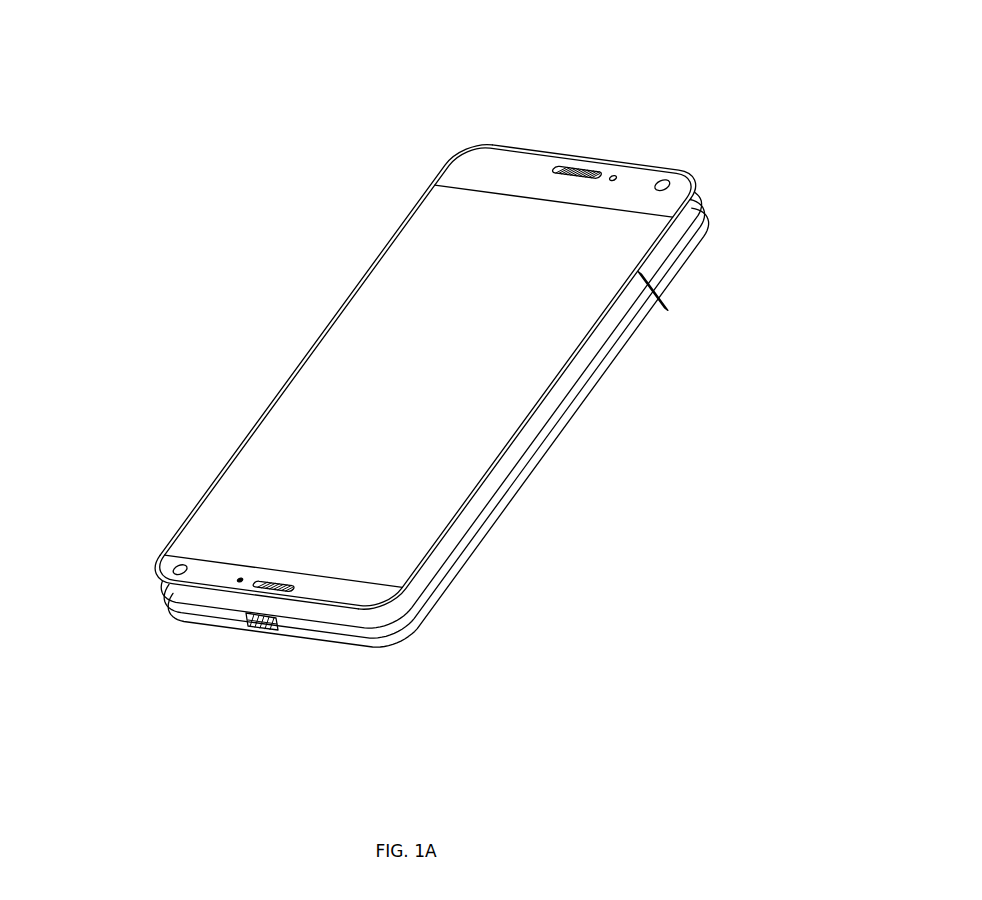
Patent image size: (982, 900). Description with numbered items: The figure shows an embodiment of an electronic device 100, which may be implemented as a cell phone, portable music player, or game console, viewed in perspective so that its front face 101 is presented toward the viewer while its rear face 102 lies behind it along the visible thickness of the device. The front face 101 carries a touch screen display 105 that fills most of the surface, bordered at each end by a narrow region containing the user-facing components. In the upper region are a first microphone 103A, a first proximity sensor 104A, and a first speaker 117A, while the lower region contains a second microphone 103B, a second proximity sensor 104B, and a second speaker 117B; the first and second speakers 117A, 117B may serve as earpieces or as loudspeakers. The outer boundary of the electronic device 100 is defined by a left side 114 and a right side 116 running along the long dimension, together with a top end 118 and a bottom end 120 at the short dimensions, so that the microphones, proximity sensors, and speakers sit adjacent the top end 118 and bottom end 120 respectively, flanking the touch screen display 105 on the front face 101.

The electronic device 100 is at (240, 178).
The front face 101 is at (346, 297).
The rear face 102 is at (556, 464).
The first microphone 103A is at (618, 170).
The second microphone 103B is at (237, 584).
The first proximity sensor 104A is at (670, 178).
The second proximity sensor 104B is at (173, 578).
The touch screen display 105 is at (379, 372).
The left side 114 is at (177, 389).
The right side 116 is at (604, 558).
The first speaker 117A is at (590, 166).
The second speaker 117B is at (262, 593).
The top end 118 is at (562, 102).
The bottom end 120 is at (241, 658).